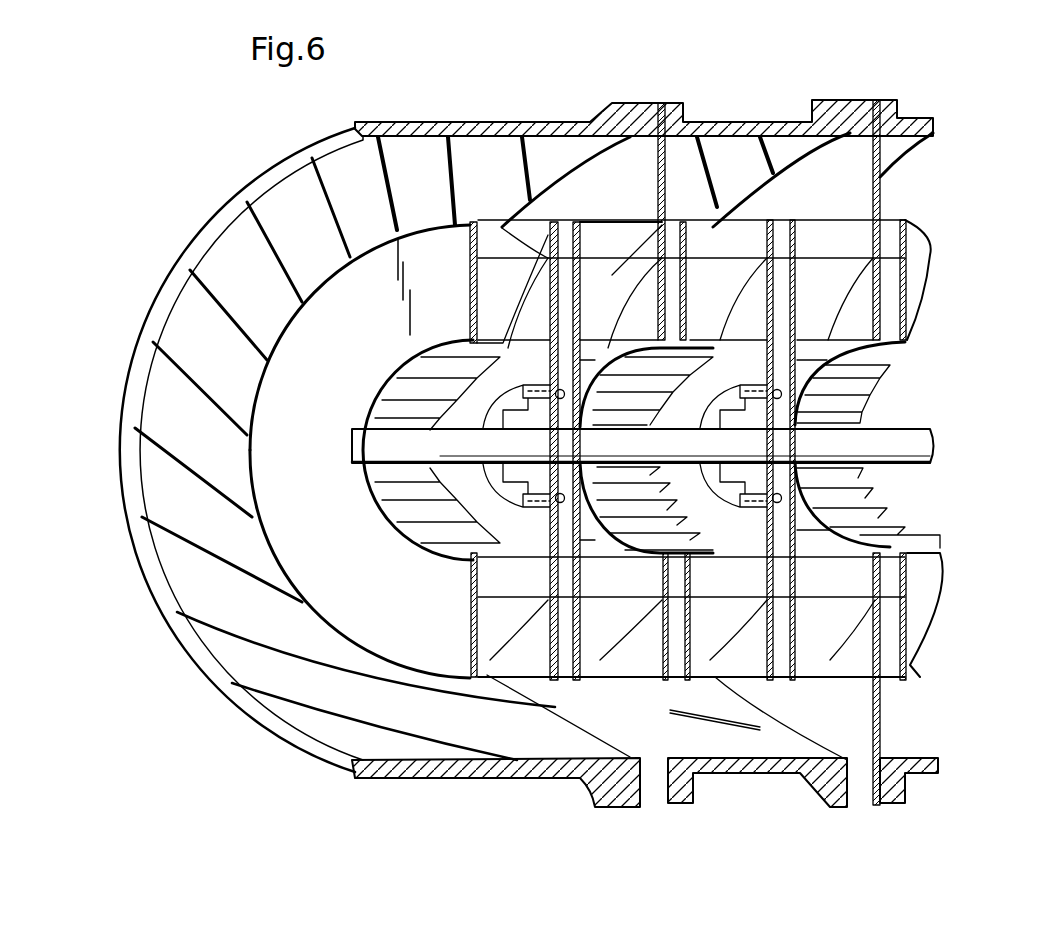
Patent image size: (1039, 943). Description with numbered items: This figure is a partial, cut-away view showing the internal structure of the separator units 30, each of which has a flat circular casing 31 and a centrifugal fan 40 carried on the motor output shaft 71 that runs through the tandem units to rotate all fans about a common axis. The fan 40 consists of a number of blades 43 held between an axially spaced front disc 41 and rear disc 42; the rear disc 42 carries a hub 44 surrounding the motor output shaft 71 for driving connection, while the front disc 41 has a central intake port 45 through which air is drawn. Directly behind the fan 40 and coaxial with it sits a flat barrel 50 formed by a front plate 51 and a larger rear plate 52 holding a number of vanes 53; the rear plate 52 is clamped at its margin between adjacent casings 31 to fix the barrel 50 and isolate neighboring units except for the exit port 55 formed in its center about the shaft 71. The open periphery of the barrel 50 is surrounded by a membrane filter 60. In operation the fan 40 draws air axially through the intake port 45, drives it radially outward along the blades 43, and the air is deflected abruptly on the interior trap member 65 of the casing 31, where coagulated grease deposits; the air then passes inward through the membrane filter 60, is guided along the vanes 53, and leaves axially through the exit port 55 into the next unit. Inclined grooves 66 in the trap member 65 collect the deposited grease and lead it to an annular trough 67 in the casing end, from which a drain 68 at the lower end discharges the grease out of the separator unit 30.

The separator unit 30 is at (547, 119).
The flat circular casing 31 is at (203, 227).
The centrifugal fan 40 is at (360, 347).
The front disc 41 is at (335, 565).
The rear disc 42 is at (530, 650).
The blades 43 is at (622, 254).
The hub 44 is at (543, 463).
The intake port 45 is at (620, 383).
The flat barrel 50 is at (577, 680).
The front plate 51 is at (800, 573).
The rear plate 52 is at (860, 700).
The vanes 53 is at (835, 622).
The exit port 55 is at (863, 362).
The membrane filter 60 is at (613, 220).
The trap member 65 is at (200, 347).
The grooves 66 is at (200, 290).
The annular trough 67 is at (803, 732).
The drain 68 is at (857, 793).
The motor output shaft 71 is at (903, 435).